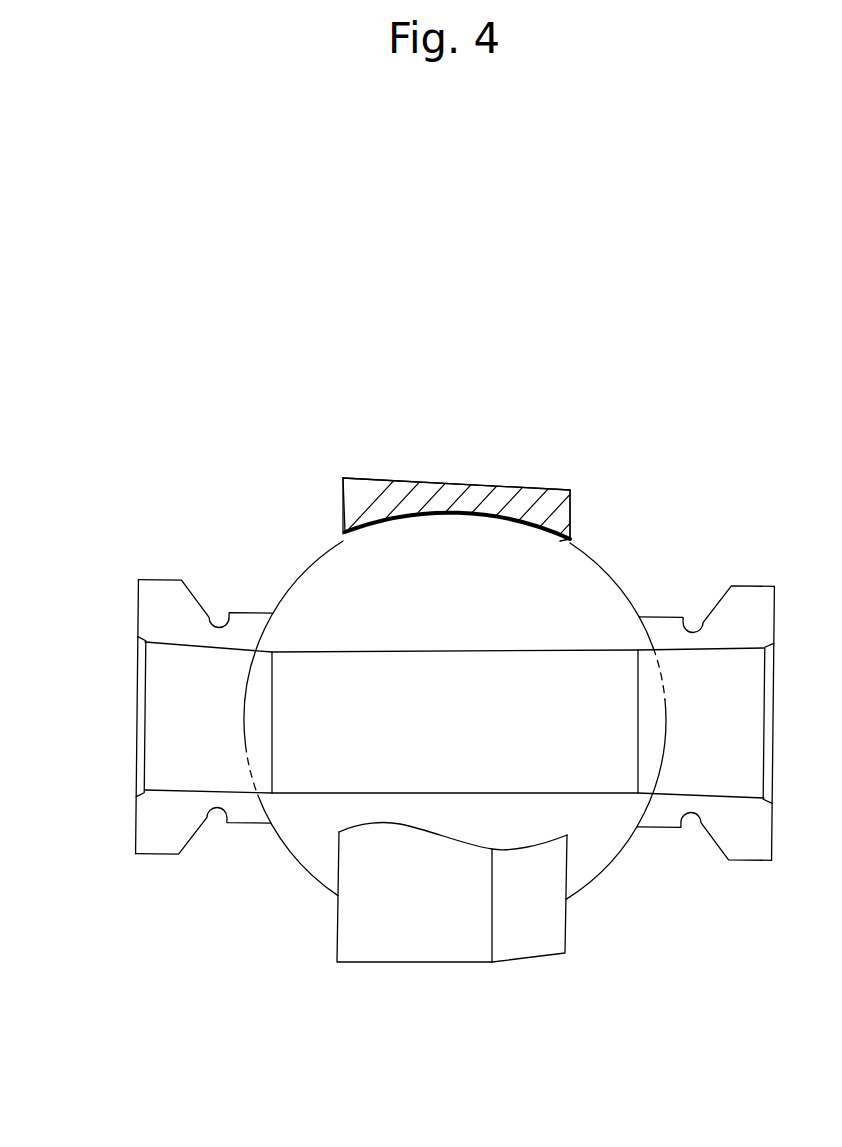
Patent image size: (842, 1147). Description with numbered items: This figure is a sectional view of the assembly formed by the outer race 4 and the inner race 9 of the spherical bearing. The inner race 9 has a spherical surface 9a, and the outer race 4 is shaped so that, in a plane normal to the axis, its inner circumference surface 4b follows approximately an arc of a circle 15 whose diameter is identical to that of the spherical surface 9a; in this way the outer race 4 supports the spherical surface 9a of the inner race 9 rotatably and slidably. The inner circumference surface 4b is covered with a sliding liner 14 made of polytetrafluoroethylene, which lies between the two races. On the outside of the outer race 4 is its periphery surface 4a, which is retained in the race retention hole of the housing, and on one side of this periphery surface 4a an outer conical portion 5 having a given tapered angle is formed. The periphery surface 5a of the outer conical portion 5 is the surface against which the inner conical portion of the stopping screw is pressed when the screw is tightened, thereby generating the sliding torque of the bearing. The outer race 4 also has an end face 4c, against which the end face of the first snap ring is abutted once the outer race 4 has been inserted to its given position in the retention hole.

The outer race 4 is at (468, 478).
The periphery surface 4a is at (416, 478).
The inner circumference surface 4b is at (366, 531).
The end face 4c is at (343, 500).
The outer conical portion 5 is at (530, 965).
The periphery surface of outer conical portion 5a is at (533, 485).
The inner race 9 is at (752, 863).
The spherical surface 9a is at (617, 582).
The sliding liner 14 is at (572, 542).
The circle 15 is at (242, 717).